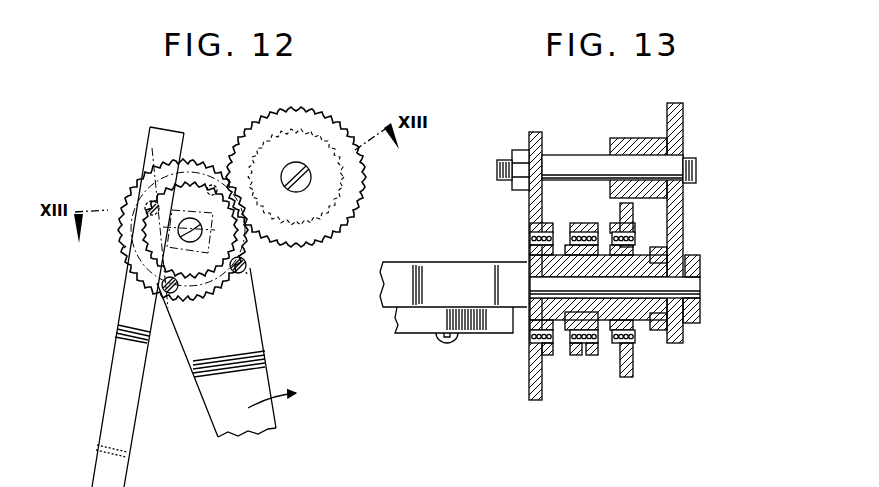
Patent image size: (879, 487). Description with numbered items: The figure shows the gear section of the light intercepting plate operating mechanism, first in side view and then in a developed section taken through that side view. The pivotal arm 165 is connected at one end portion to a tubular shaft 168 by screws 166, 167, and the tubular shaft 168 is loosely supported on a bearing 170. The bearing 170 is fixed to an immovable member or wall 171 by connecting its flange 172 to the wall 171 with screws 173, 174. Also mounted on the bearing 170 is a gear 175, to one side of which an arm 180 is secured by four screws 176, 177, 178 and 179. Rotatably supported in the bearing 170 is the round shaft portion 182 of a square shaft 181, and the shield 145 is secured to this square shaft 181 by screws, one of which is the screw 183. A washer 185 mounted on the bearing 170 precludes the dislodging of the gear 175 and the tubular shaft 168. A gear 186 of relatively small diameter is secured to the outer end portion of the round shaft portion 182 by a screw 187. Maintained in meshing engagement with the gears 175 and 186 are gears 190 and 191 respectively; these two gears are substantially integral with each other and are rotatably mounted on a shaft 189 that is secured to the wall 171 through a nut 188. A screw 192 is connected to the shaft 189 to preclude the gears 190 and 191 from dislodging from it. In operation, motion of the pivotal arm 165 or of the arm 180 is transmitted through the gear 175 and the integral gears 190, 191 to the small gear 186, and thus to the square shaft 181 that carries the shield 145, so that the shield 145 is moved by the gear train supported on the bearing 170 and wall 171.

In FIG. 12, the shield 145 is at (140, 384).
In FIG. 13, the shield 145 is at (403, 333).
In FIG. 13, the pivotal arm 165 is at (576, 355).
In FIG. 13, the screw 166 is at (606, 346).
In FIG. 13, the screw 167 is at (570, 232).
In FIG. 13, the tubular shaft 168 is at (562, 346).
In FIG. 13, the bearing 170 is at (530, 265).
In FIG. 13, the wall 171 is at (530, 392).
In FIG. 13, the flange 172 is at (536, 355).
In FIG. 13, the screw 173 is at (528, 234).
In FIG. 13, the screw 174 is at (530, 337).
In FIG. 12, the gear 175 is at (124, 248).
In FIG. 13, the gear 175 is at (625, 380).
In FIG. 12, the screw 176 is at (246, 273).
In FIG. 12, the screw 177 is at (213, 168).
In FIG. 13, the screw 177 is at (633, 243).
In FIG. 12, the screw 178 is at (150, 207).
In FIG. 13, the screw 178 is at (637, 341).
In FIG. 12, the screw 179 is at (163, 287).
In FIG. 12, the arm 180 is at (259, 331).
In FIG. 13, the arm 180 is at (634, 350).
In FIG. 12, the square shaft 181 is at (246, 263).
In FIG. 13, the square shaft 181 is at (443, 263).
In FIG. 12, the round shaft portion 182 is at (192, 248).
In FIG. 13, the round shaft portion 182 is at (665, 290).
In FIG. 13, the screw 183 is at (448, 343).
In FIG. 13, the washer 185 is at (660, 250).
In FIG. 12, the gear 186 is at (152, 183).
In FIG. 13, the gear 186 is at (698, 323).
In FIG. 13, the screw 187 is at (708, 256).
In FIG. 13, the nut 188 is at (522, 149).
In FIG. 13, the shaft 189 is at (572, 162).
In FIG. 12, the gear 190 is at (327, 150).
In FIG. 13, the gear 190 is at (635, 127).
In FIG. 12, the gear 191 is at (268, 118).
In FIG. 13, the gear 191 is at (684, 118).
In FIG. 12, the screw 192 is at (297, 192).
In FIG. 13, the screw 192 is at (696, 166).